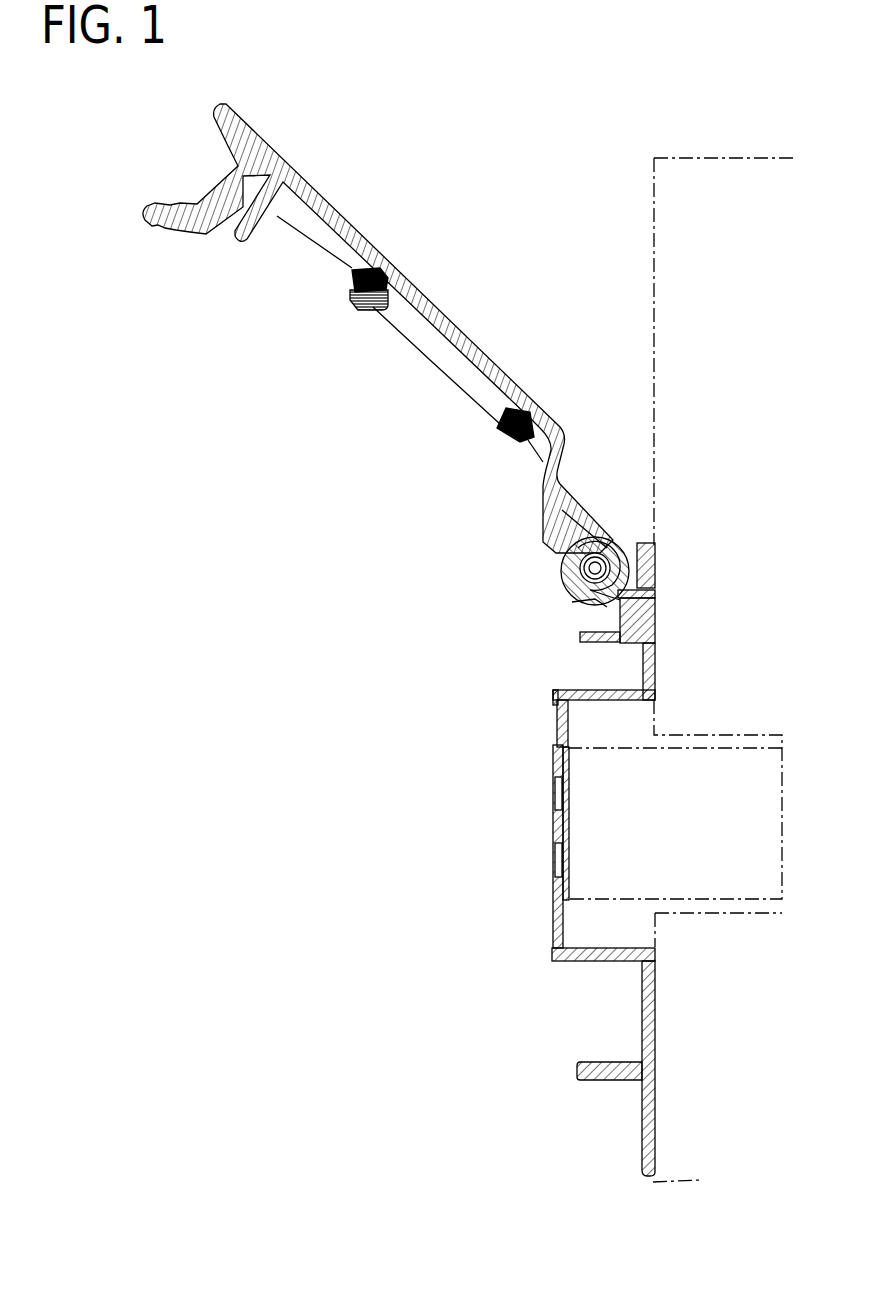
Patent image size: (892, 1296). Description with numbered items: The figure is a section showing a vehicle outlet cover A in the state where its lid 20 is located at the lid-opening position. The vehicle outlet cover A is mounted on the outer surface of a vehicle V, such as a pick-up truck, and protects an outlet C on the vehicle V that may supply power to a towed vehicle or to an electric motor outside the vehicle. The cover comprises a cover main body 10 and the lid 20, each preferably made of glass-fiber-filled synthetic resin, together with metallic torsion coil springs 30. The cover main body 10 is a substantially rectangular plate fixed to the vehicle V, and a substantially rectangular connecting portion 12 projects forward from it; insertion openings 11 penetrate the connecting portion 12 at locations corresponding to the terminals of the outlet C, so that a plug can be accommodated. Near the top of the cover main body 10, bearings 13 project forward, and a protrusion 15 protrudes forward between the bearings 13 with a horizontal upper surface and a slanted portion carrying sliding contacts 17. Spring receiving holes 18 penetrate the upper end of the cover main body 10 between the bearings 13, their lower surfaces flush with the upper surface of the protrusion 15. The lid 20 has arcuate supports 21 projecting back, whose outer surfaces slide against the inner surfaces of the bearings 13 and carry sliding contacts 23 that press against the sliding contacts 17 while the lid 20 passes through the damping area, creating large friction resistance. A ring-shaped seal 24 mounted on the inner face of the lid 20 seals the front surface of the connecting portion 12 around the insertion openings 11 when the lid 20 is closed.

The cover main body 10 is at (642, 1005).
The insertion openings 11 is at (555, 782).
The connecting portion 12 is at (600, 690).
The bearings 13 is at (573, 602).
The protrusion 15 is at (607, 617).
The sliding contacts 17 is at (650, 557).
The spring receiving holes 18 is at (655, 613).
The lid 20 is at (450, 330).
The supports 21 is at (577, 587).
The sliding contacts 23 is at (557, 572).
The ring-shaped seal 24 is at (500, 432).
The torsion coil springs 30 is at (612, 541).
The vehicle outlet cover A is at (452, 238).
The vehicle V is at (652, 227).
The outlet C is at (593, 905).